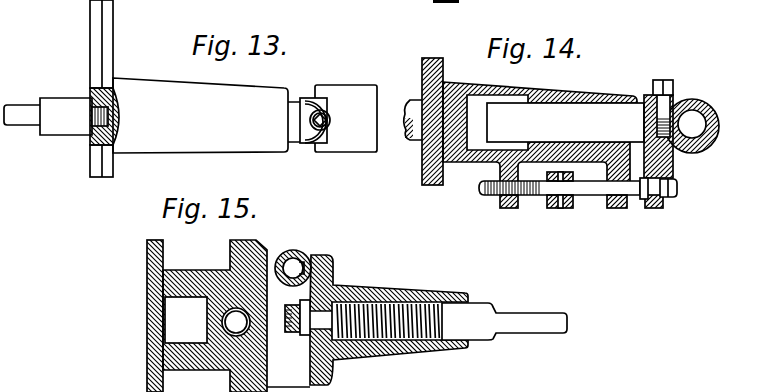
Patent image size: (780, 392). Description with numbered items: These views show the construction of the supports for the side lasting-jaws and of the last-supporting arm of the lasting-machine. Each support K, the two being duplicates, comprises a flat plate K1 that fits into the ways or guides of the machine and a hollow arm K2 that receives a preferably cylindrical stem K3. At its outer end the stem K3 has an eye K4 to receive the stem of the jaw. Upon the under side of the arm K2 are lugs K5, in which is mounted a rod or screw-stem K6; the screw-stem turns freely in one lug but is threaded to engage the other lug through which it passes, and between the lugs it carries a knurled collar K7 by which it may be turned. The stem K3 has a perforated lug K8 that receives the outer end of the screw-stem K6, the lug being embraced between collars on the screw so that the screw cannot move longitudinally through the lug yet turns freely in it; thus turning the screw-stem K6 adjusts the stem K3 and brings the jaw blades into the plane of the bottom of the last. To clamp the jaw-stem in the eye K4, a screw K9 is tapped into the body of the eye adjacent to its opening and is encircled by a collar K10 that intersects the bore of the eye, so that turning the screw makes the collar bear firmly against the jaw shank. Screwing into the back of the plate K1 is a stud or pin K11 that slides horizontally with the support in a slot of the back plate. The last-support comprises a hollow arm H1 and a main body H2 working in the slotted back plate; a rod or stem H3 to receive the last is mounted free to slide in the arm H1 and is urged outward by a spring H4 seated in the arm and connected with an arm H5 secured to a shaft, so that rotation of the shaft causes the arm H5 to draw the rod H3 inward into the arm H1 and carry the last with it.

In FIG. 13, the flat plate K1 is at (85, 88).
In FIG. 14, the flat plate K1 is at (422, 68).
In FIG. 13, the stud or pin K11 is at (67, 105).
In FIG. 13, the support K is at (245, 112).
In FIG. 14, the support K is at (543, 122).
In FIG. 13, the hollow arm K2 is at (200, 115).
In FIG. 14, the hollow arm K2 is at (540, 125).
In FIG. 13, the stem K3 is at (293, 143).
In FIG. 14, the stem K3 is at (565, 122).
In FIG. 13, the eye K4 is at (346, 118).
In FIG. 14, the eye K4 is at (719, 128).
In FIG. 13, the screw K9 is at (331, 115).
In FIG. 14, the screw K9 is at (674, 86).
In FIG. 14, the collar K10 is at (652, 97).
In FIG. 14, the lugs K5 is at (508, 208).
In FIG. 14, the rod or stem (screw-stem) K6 is at (482, 191).
In FIG. 14, the knurled collar K7 is at (563, 208).
In FIG. 14, the perforated lug K8 is at (657, 208).
In FIG. 15, the main body H2 is at (228, 316).
In FIG. 15, the arm H5 is at (288, 250).
In FIG. 15, the hollow arm H1 is at (389, 320).
In FIG. 15, the spring H4 is at (410, 342).
In FIG. 15, the rod or stem H3 is at (504, 317).